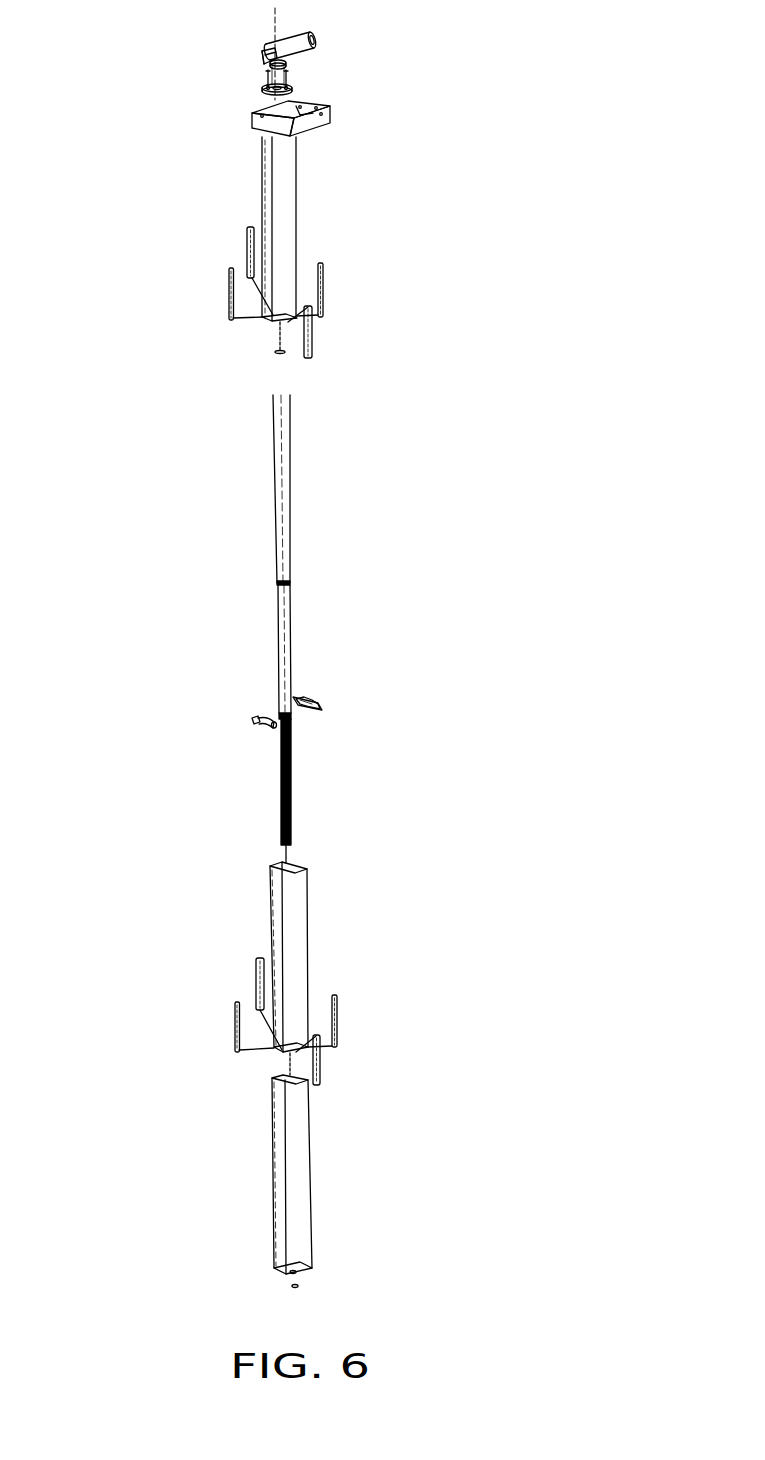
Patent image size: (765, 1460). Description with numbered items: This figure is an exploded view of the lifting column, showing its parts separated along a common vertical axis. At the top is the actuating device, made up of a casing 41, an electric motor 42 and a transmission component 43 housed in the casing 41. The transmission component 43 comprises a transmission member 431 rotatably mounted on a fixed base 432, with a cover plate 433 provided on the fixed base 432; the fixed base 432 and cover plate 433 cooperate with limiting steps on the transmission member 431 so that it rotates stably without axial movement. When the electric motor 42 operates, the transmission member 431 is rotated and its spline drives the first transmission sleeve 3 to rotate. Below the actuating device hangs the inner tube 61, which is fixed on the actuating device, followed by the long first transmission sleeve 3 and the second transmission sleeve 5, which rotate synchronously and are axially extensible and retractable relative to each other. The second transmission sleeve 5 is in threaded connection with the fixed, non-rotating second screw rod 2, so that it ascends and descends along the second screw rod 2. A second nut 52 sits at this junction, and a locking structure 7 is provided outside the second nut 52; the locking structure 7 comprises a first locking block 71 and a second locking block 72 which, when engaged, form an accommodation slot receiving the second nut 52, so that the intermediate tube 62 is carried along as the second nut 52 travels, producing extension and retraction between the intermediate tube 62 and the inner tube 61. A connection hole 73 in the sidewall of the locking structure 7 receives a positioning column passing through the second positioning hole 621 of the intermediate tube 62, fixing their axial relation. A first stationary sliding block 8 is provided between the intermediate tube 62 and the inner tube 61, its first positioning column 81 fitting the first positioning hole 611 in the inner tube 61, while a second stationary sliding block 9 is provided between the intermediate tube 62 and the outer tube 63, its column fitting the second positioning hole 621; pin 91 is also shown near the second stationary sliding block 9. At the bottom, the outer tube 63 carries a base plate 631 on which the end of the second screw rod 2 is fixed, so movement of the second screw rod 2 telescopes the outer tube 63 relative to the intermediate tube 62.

The second screw rod 2 is at (333, 791).
The first transmission sleeve 3 is at (330, 490).
The second transmission sleeve 5 is at (342, 669).
The locking structure 7 is at (226, 695).
The first stationary sliding block 8 is at (322, 306).
The second stationary sliding block 9 is at (326, 1044).
The casing 41 is at (331, 121).
The electric motor 42 is at (337, 35).
The transmission component 43 is at (241, 59).
The second nut 52 is at (342, 733).
The inner tube 61 is at (291, 254).
The intermediate tube 62 is at (275, 986).
The outer tube 63 is at (347, 1191).
The first locking block 71 is at (222, 715).
The second locking block 72 is at (292, 700).
The connection hole 73 is at (361, 691).
The first positioning column 81 is at (352, 346).
The lower pin 91 is at (351, 1083).
The transmission member 431 is at (213, 61).
The fixed base 432 is at (207, 32).
The cover plate 433 is at (215, 98).
The first positioning hole 611 is at (230, 342).
The second positioning hole 621 is at (221, 1077).
The base plate 631 is at (348, 1285).